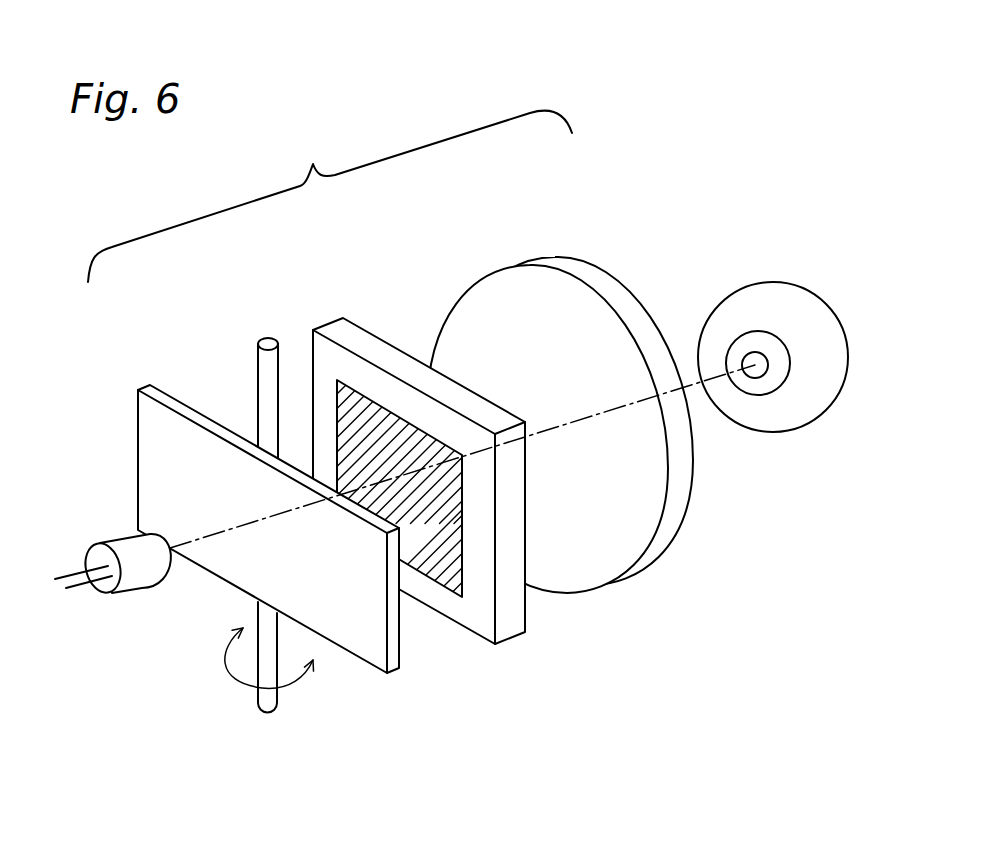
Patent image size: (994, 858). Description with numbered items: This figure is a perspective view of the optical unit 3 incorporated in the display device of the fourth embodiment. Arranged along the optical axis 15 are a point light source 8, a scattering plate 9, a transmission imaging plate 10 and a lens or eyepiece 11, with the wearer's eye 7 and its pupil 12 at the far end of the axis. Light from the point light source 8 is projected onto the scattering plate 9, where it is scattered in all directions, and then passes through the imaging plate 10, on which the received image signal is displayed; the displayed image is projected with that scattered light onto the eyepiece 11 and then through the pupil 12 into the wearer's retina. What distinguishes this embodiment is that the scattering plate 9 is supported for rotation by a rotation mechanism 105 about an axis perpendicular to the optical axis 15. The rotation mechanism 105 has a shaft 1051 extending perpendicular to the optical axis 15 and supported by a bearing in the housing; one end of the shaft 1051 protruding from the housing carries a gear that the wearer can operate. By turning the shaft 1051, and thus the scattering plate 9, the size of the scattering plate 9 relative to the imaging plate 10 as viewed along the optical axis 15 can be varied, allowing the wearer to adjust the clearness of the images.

The optical unit 3 is at (330, 196).
The eye 7 is at (763, 285).
The point light source 8 is at (136, 530).
The scattering plate 9 is at (166, 392).
The transmission imaging plate 10 is at (353, 422).
The eyepiece 11 is at (490, 282).
The pupil 12 is at (755, 378).
The optical axis 15 is at (573, 422).
The rotation mechanism 105 is at (246, 691).
The shaft 1051 is at (263, 380).